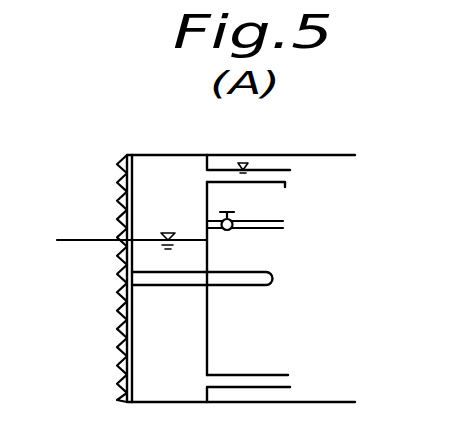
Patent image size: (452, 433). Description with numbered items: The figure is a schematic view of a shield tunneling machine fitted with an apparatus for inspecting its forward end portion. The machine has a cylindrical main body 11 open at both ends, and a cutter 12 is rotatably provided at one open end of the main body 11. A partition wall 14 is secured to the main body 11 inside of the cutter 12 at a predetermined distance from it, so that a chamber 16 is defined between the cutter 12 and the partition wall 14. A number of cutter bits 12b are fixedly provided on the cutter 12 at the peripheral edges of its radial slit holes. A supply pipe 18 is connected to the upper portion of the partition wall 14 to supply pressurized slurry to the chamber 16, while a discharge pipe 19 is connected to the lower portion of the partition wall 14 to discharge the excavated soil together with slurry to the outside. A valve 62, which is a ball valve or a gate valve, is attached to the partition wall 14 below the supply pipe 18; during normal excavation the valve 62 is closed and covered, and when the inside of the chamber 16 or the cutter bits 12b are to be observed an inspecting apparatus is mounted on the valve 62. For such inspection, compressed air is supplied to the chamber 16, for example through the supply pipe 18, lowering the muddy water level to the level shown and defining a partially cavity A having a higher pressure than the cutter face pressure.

The main body 11 is at (317, 155).
The cutter 12 is at (127, 368).
The cutter bits 12b is at (118, 322).
The partition wall 14 is at (207, 328).
The chamber 16 is at (183, 344).
The supply pipe 18 is at (285, 184).
The discharge pipe 19 is at (273, 374).
The valve 62 is at (231, 229).
The partially cavity A is at (135, 201).